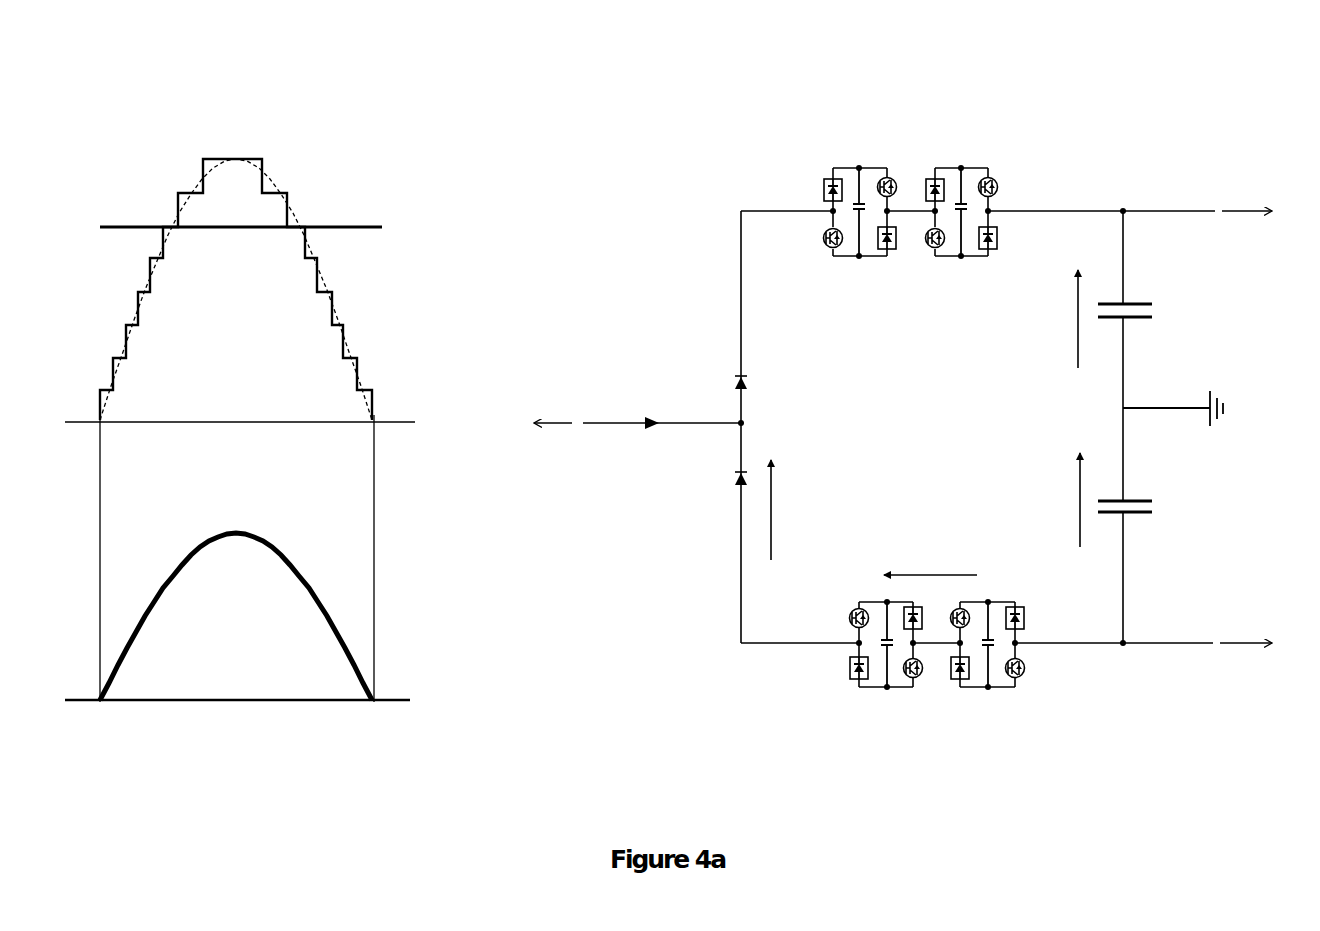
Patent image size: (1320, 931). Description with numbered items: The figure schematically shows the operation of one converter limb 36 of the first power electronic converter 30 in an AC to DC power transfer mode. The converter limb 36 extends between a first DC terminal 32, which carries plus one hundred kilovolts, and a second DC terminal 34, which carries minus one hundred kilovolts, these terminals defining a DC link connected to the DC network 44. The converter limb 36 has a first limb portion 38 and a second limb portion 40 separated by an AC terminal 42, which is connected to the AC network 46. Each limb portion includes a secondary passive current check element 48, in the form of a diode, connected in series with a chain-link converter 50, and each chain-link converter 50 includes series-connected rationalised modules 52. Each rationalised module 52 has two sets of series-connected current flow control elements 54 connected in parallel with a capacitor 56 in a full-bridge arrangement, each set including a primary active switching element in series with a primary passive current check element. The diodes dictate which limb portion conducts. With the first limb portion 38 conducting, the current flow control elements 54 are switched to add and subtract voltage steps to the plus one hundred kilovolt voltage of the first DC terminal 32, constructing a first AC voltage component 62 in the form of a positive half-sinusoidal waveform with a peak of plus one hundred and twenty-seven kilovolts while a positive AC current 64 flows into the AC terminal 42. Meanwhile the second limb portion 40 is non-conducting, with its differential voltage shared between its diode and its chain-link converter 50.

The first power electronic converter 30 is at (902, 427).
The first DC terminal 32 is at (1128, 216).
The second DC terminal 34 is at (1128, 638).
The converter limb 36 is at (1050, 202).
The first limb portion 38 is at (730, 222).
The second limb portion 40 is at (735, 637).
The AC terminal 42 is at (745, 422).
The DC network 44 is at (1266, 427).
The AC network 46 is at (617, 423).
The secondary passive current check element 48 is at (737, 375).
The chain-link converter 50 is at (886, 427).
The rationalised module 52 is at (850, 245).
The current flow control element 54 is at (833, 158).
The capacitor 56 is at (851, 168).
The first AC voltage component 62 is at (181, 168).
The positive AC current 64 is at (180, 548).